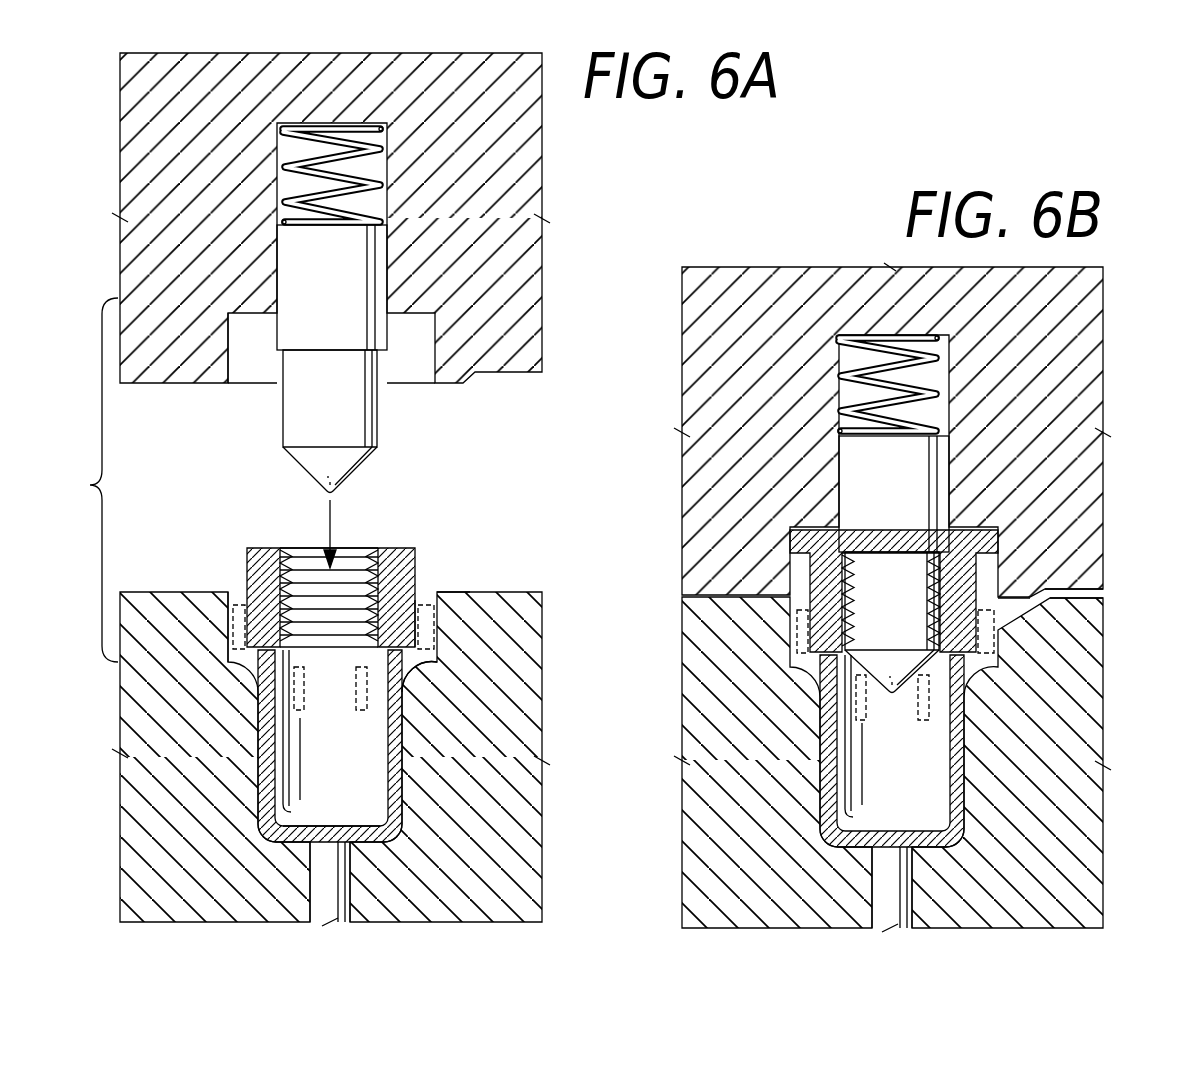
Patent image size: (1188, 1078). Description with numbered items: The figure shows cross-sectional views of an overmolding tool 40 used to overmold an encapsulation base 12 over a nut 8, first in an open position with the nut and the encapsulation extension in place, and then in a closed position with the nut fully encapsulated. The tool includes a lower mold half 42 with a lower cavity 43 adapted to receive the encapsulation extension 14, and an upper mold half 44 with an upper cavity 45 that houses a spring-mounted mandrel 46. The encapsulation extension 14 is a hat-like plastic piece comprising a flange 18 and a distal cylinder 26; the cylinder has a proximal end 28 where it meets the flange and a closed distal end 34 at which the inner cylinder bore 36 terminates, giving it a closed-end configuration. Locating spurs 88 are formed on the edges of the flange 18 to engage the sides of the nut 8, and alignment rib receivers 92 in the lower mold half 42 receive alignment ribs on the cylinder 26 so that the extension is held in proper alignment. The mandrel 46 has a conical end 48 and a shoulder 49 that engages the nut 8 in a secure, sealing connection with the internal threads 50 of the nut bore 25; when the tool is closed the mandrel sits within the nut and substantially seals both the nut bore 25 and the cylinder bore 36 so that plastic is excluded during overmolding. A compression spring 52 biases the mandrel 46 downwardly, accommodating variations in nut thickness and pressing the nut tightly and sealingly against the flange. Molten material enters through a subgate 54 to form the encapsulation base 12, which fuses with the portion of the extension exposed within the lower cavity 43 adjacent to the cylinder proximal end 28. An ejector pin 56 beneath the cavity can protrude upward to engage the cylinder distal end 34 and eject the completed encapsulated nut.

In FIG. 6A, the nut 8 is at (372, 593).
In FIG. 6B, the nut 8 is at (850, 598).
In FIG. 6B, the encapsulation base 12 is at (998, 530).
In FIG. 6A, the encapsulation extension 14 is at (398, 838).
In FIG. 6B, the encapsulation extension 14 is at (962, 842).
In FIG. 6A, the flange 18 is at (418, 642).
In FIG. 6A, the nut bore 25 is at (307, 563).
In FIG. 6A, the distal cylinder 26 is at (262, 770).
In FIG. 6B, the distal cylinder 26 is at (822, 775).
In FIG. 6A, the proximal end 28 is at (376, 649).
In FIG. 6A, the distal end 34 is at (340, 828).
In FIG. 6A, the cylinder bore 36 is at (355, 775).
In FIG. 6B, the cylinder bore 36 is at (925, 815).
In FIG. 6A, the overmolding tool 40 is at (573, 218).
In FIG. 6A, the lower mold half 42 is at (542, 592).
In FIG. 6A, the lower cavity 43 is at (235, 600).
In FIG. 6A, the upper mold half 44 is at (542, 378).
In FIG. 6A, the upper cavity 45 is at (242, 385).
In FIG. 6A, the mandrel 46 is at (343, 320).
In FIG. 6B, the mandrel 46 is at (905, 512).
In FIG. 6A, the conical end 48 is at (322, 480).
In FIG. 6A, the shoulder 49 is at (300, 352).
In FIG. 6A, the internal threads 50 is at (365, 560).
In FIG. 6A, the compression spring 52 is at (300, 227).
In FIG. 6A, the subgate 54 is at (468, 600).
In FIG. 6B, the subgate 54 is at (1103, 596).
In FIG. 6A, the ejector pin 56 is at (312, 870).
In FIG. 6B, the ejector pin 56 is at (872, 873).
In FIG. 6A, the locating spurs 88 is at (422, 603).
In FIG. 6A, the alignment rib receivers 92 is at (300, 706).
In FIG. 6B, the alignment rib receivers 92 is at (870, 722).